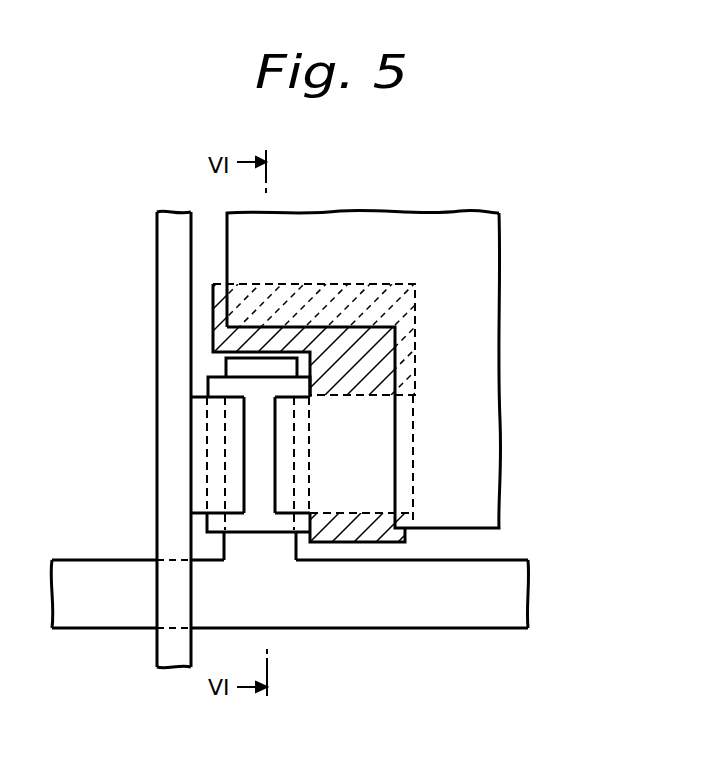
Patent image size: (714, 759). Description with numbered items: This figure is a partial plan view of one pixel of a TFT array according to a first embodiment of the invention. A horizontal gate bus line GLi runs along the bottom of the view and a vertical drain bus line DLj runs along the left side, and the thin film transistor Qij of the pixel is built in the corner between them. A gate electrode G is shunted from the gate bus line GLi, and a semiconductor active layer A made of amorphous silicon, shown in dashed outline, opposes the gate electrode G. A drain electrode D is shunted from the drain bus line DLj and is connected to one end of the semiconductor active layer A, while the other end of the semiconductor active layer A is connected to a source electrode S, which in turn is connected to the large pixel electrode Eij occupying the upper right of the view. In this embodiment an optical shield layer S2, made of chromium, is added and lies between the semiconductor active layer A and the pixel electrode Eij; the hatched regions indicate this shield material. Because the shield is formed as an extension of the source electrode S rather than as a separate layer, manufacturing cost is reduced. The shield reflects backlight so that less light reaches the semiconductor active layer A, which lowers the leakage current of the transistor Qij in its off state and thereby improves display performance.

The drain bus line DLj is at (213, 284).
The gate bus line GLi is at (90, 617).
The pixel electrode Eij is at (499, 265).
The source electrode S is at (413, 442).
The optical shield layer S2 is at (405, 545).
The gate electrode G is at (157, 305).
The thin film transistor Qij is at (236, 450).
The semiconductor active layer A is at (207, 487).
The drain electrode D is at (240, 513).